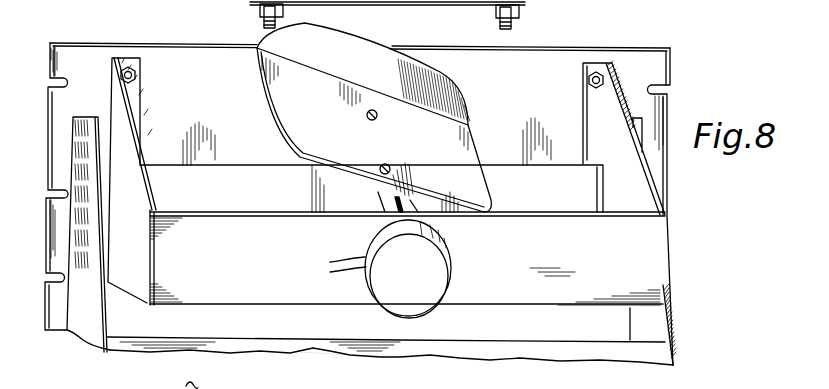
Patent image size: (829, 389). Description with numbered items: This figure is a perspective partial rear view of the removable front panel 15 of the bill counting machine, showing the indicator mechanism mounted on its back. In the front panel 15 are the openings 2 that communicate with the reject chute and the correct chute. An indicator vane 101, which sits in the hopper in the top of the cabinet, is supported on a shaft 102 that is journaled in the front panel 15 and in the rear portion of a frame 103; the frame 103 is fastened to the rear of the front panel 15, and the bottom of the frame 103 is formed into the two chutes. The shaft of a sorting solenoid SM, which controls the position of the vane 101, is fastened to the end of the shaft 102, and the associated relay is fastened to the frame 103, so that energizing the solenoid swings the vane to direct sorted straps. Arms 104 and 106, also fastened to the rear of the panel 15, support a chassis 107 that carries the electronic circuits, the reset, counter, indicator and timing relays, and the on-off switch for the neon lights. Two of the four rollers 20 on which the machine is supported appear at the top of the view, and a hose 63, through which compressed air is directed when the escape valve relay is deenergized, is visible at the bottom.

The openings 2 is at (222, 176).
The front panel 15 is at (220, 86).
The rollers 20 is at (260, 15).
The hose 63 is at (247, 385).
The indicator vane 101 is at (286, 116).
The shaft 102 is at (380, 199).
The frame 103 is at (120, 126).
The arm 104 is at (76, 235).
The arm 106 is at (676, 325).
The chassis 107 is at (498, 355).
The sorting solenoid SM is at (438, 275).